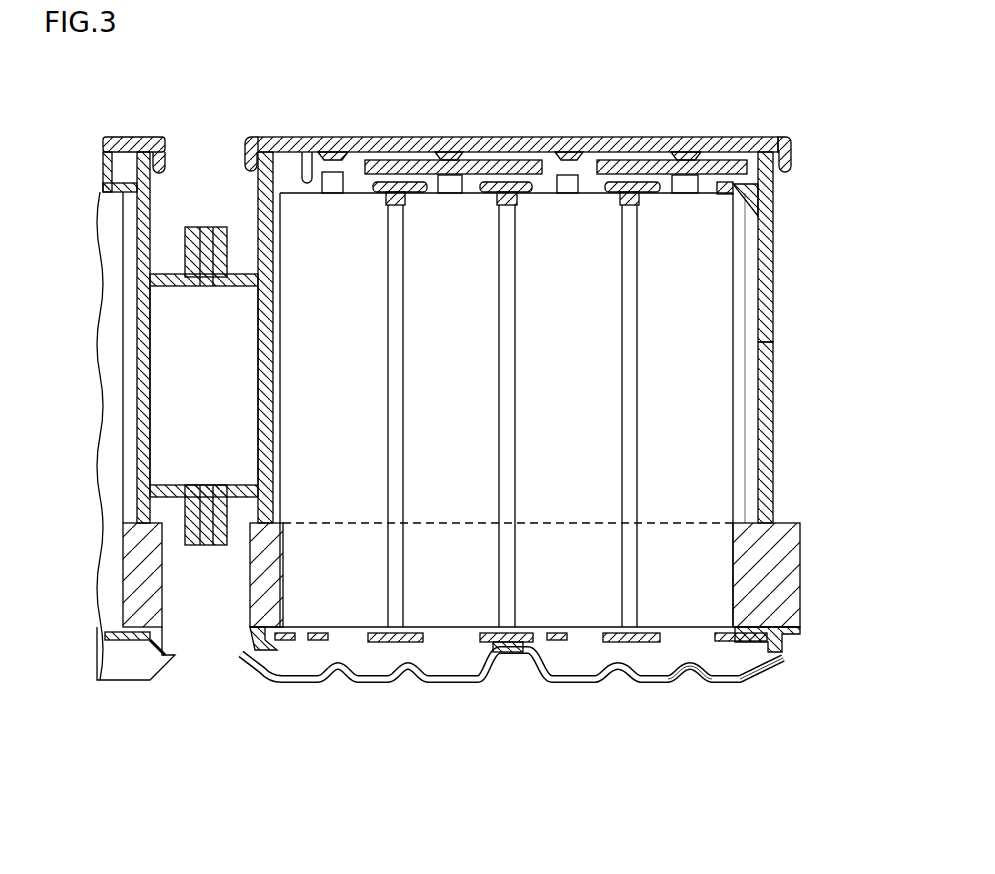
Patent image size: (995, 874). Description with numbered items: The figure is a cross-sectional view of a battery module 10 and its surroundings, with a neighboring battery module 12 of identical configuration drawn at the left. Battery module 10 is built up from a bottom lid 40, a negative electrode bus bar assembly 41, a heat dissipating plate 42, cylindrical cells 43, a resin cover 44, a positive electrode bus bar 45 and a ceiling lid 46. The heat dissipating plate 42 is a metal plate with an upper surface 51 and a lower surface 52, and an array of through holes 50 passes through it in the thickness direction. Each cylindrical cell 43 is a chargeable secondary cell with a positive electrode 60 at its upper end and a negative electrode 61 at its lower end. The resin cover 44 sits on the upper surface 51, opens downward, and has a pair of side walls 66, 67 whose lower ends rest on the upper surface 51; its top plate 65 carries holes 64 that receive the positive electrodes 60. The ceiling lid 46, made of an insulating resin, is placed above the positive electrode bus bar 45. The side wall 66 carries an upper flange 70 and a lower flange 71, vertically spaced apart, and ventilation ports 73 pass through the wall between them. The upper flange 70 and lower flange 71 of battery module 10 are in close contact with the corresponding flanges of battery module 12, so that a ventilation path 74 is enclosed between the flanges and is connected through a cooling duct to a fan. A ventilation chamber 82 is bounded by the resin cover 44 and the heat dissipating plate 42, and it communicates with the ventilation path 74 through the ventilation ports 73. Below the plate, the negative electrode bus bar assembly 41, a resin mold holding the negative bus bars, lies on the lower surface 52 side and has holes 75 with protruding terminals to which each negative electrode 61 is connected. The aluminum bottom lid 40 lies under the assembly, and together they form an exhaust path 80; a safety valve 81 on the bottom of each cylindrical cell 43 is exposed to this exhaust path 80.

The battery module 10 is at (523, 130).
The battery module 12 is at (127, 128).
The bottom lid 40 is at (462, 682).
The negative electrode bus bar assembly 41 is at (720, 664).
The heat dissipating plate 42 is at (803, 596).
The cylindrical cell 43 is at (722, 396).
The resin cover 44 is at (773, 270).
The positive electrode bus bar 45 is at (755, 138).
The ceiling lid 46 is at (683, 138).
The through holes 50 is at (752, 570).
The upper surface 51 is at (793, 521).
The lower surface 52 is at (790, 628).
The positive electrode 60 is at (565, 178).
The negative electrode 61 is at (577, 640).
The holes 64 is at (594, 185).
The top plate 65 is at (625, 185).
The side wall 66 is at (265, 195).
The side wall 67 is at (768, 351).
The upper flange 70 is at (165, 282).
The lower flange 71 is at (240, 492).
The ventilation ports 73 is at (263, 307).
The ventilation path 74 is at (195, 395).
The holes 75 is at (713, 640).
The exhaust path 80 is at (664, 650).
The safety valve 81 is at (445, 645).
The ventilation chamber 82 is at (750, 306).